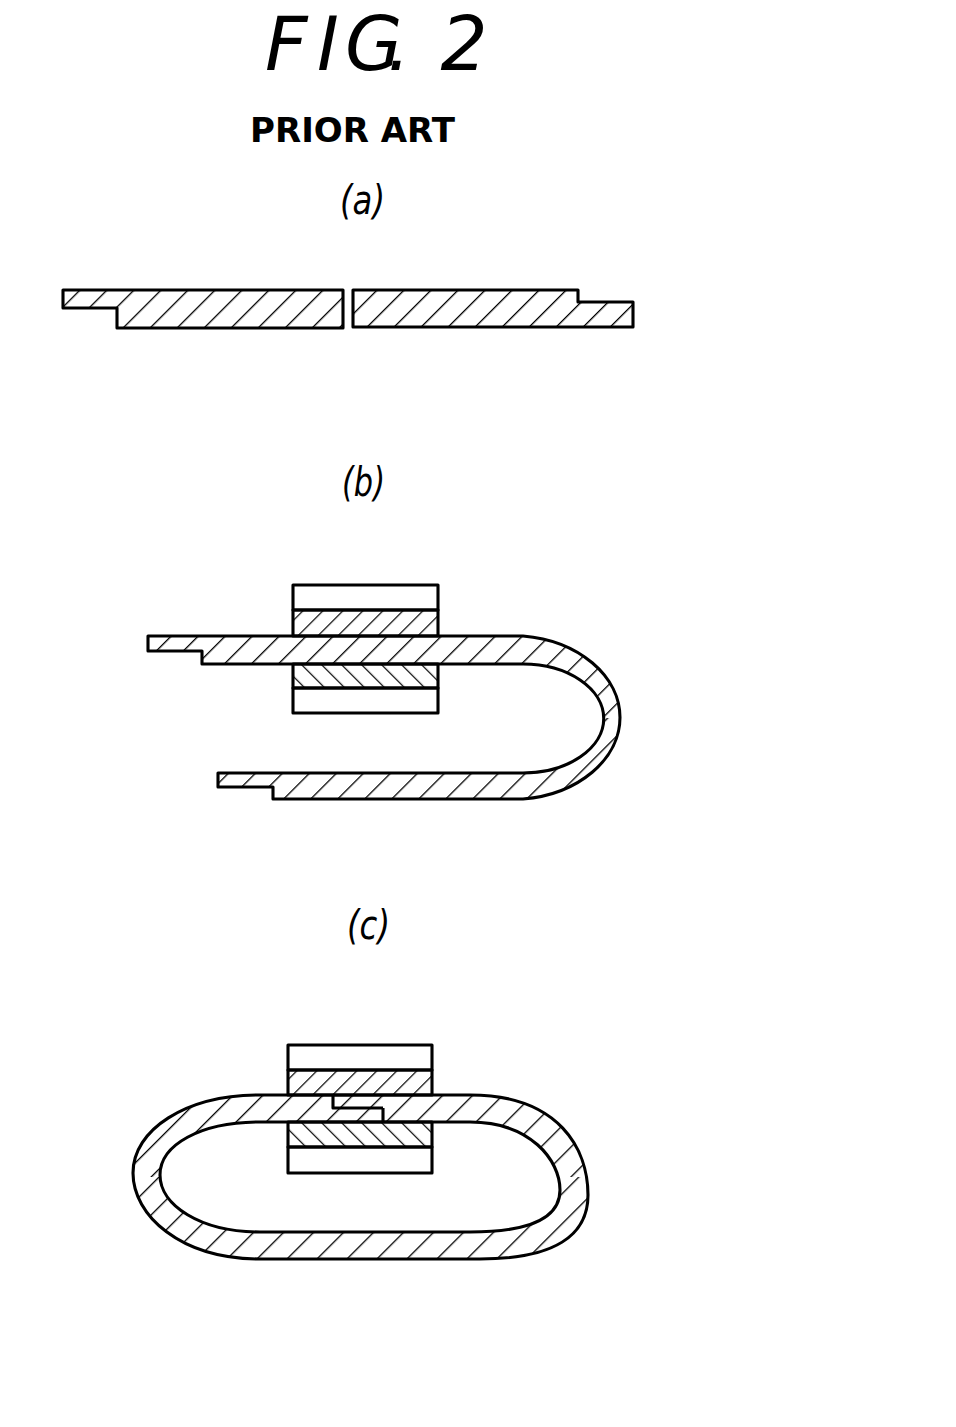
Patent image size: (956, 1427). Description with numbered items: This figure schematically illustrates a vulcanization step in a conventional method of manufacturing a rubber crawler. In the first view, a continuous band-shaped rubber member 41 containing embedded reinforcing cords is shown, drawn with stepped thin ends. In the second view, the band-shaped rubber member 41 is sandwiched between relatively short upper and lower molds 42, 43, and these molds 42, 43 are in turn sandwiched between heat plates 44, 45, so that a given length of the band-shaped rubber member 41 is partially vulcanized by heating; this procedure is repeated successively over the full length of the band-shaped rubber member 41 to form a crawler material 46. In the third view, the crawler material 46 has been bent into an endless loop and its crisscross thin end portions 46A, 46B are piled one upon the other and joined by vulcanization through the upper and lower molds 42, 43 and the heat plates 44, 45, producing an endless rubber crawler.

The band-shaped rubber member 41 is at (490, 298).
The upper mold 42 is at (428, 620).
The lower mold 43 is at (437, 673).
The heat plate 44 is at (310, 598).
The heat plate 45 is at (295, 702).
The crawler material 46 is at (547, 1108).
The thin end portion 46A is at (345, 1102).
The thin end portion 46B is at (378, 1116).